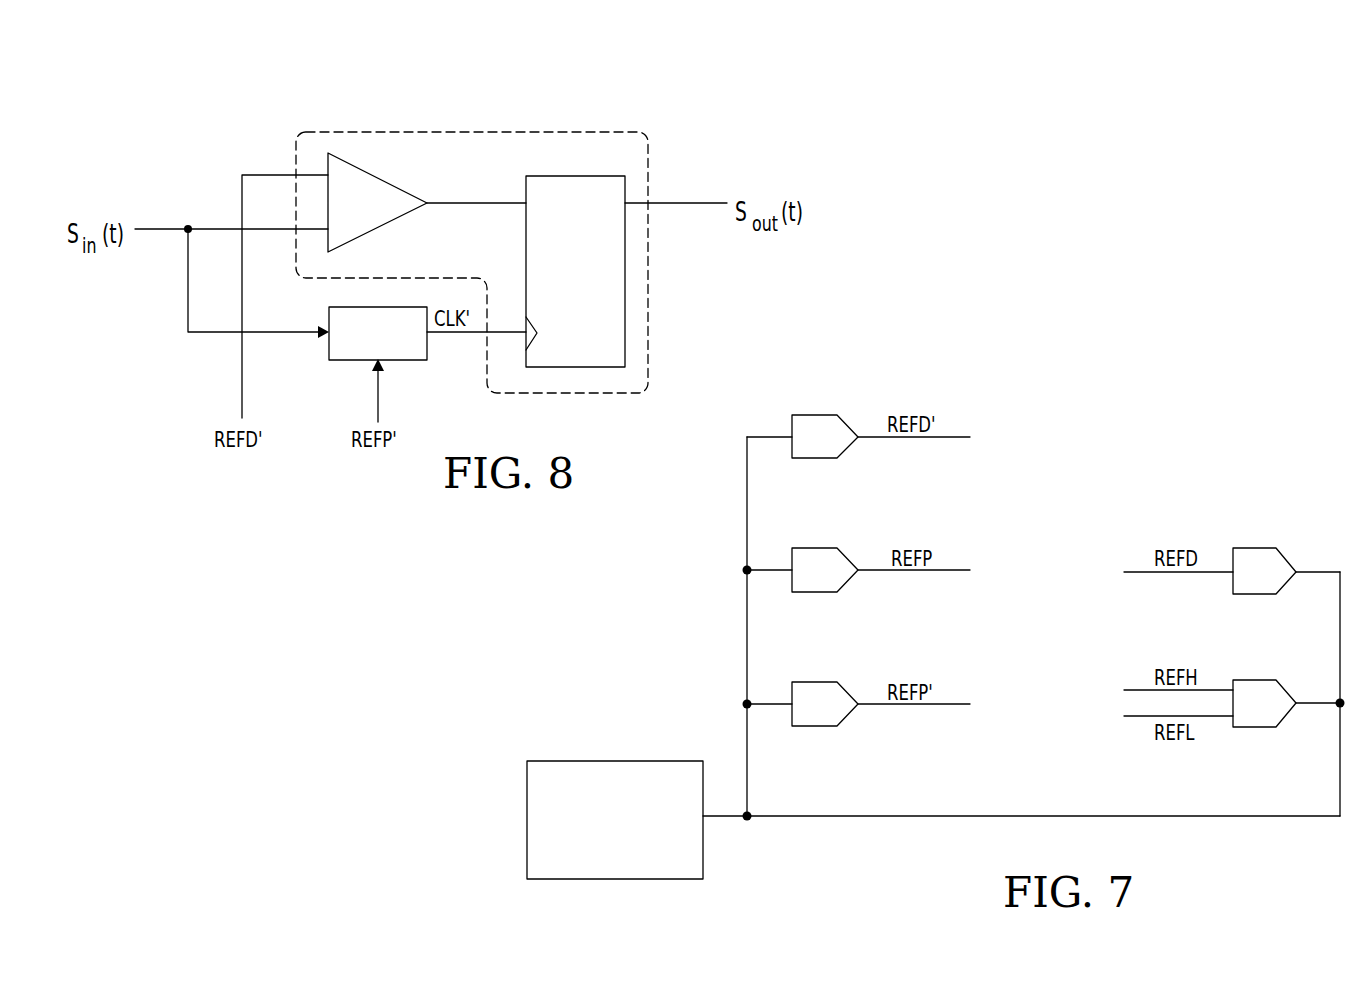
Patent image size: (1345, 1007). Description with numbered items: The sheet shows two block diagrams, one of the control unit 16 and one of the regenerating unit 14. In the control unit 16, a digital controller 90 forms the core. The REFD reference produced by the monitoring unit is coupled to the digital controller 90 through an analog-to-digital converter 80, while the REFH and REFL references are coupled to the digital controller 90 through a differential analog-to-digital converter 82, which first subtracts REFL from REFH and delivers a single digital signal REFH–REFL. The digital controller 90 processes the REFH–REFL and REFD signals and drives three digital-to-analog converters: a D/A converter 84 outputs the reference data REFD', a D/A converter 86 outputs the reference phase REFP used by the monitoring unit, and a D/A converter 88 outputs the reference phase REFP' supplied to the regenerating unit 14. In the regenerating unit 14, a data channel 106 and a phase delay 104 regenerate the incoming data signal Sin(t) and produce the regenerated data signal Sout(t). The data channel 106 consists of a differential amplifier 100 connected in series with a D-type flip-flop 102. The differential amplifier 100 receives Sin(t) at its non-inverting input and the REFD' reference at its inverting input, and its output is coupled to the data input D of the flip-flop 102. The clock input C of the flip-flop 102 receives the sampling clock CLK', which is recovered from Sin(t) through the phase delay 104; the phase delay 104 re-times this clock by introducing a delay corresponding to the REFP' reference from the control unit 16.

In FIG. 8, the regenerating unit 14 is at (710, 64).
In FIG. 8, the differential amplifier 100 is at (390, 182).
In FIG. 8, the D-type flip-flop 102 is at (565, 176).
In FIG. 8, the phase delay 104 is at (331, 360).
In FIG. 8, the data channel 106 is at (352, 124).
In FIG. 7, the control unit 16 is at (1228, 409).
In FIG. 7, the analog-to-digital converter 80 is at (1254, 548).
In FIG. 7, the differential analog-to-digital converter 82 is at (1254, 680).
In FIG. 7, the digital-to-analog converter 84 is at (814, 415).
In FIG. 7, the digital-to-analog converter 86 is at (814, 548).
In FIG. 7, the digital-to-analog converter 88 is at (814, 682).
In FIG. 7, the digital controller 90 is at (627, 866).